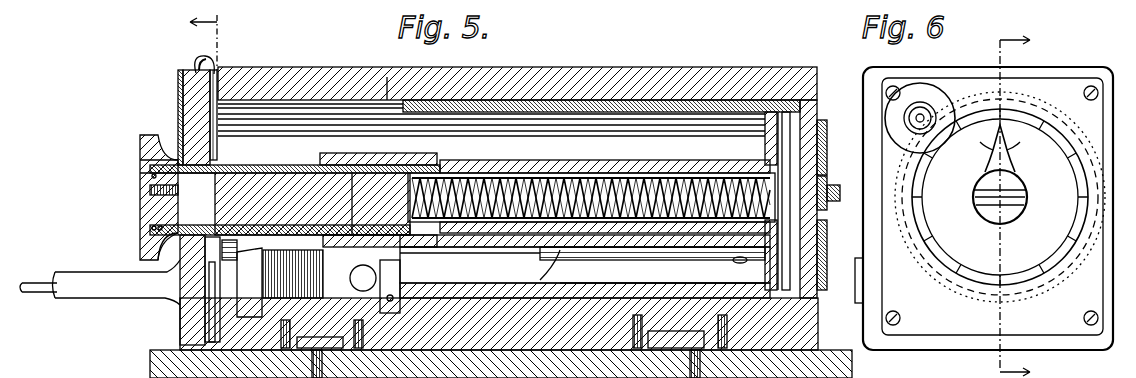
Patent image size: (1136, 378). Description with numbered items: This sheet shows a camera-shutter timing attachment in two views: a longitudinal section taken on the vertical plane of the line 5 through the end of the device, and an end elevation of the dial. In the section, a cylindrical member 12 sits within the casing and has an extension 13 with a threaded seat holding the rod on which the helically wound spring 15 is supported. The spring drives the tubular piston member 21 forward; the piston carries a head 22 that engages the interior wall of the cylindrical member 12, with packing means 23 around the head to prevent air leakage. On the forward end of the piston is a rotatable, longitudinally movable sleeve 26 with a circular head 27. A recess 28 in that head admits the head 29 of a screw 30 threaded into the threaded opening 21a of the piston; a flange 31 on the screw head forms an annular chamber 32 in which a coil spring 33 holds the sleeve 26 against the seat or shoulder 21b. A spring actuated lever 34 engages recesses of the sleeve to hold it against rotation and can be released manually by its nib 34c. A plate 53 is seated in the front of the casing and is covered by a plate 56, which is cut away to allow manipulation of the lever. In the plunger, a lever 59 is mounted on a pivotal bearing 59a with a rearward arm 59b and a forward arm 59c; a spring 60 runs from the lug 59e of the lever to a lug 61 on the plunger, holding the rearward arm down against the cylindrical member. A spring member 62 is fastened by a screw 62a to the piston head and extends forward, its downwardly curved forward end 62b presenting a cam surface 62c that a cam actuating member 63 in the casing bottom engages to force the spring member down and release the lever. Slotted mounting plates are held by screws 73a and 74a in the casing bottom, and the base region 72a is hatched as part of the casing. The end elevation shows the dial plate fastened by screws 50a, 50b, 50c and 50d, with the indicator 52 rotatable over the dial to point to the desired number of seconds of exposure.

In FIG. 5, the cylindrical member 12 is at (590, 100).
In FIG. 5, the extension 13 is at (215, 42).
In FIG. 5, the helically wound spring 15 is at (636, 178).
In FIG. 5, the tubular piston member 21 is at (546, 160).
In FIG. 5, the threaded opening 21a is at (233, 178).
In FIG. 5, the seat or shoulder 21b is at (342, 160).
In FIG. 5, the head 22 is at (740, 110).
In FIG. 5, the packing means 23 is at (762, 115).
In FIG. 5, the sleeve 26 is at (276, 166).
In FIG. 5, the circular head 27 is at (147, 157).
In FIG. 5, the recess 28 is at (140, 160).
In FIG. 5, the head 29 is at (140, 168).
In FIG. 5, the screw 30 is at (143, 190).
In FIG. 5, the flange 31 is at (145, 233).
In FIG. 5, the annular chamber 32 is at (147, 242).
In FIG. 5, the coil spring 33 is at (150, 228).
In FIG. 5, the spring actuated lever 34 is at (186, 100).
In FIG. 5, the nib 34c is at (198, 62).
In FIG. 5, the plate 53 is at (180, 88).
In FIG. 5, the plate 56 is at (215, 117).
In FIG. 5, the lever 59 is at (575, 274).
In FIG. 5, the pivotal bearing 59a is at (387, 254).
In FIG. 5, the arm 59b is at (470, 264).
In FIG. 5, the arm 59c is at (319, 274).
In FIG. 5, the lug 59e is at (360, 264).
In FIG. 5, the spring 60 is at (385, 245).
In FIG. 5, the lug 61 is at (330, 204).
In FIG. 5, the spring member 62 is at (662, 268).
In FIG. 5, the screw 62a is at (726, 258).
In FIG. 5, the forward end 62b is at (652, 257).
In FIG. 5, the cam surface 62c is at (558, 265).
In FIG. 5, the cam actuating member 63 is at (170, 290).
In FIG. 5, the base 72a is at (400, 300).
In FIG. 5, the screw 73a is at (322, 349).
In FIG. 5, the screw 74a is at (718, 325).
In FIG. 6, the section line 5 is at (1003, 202).
In FIG. 6, the screw 50a is at (888, 88).
In FIG. 6, the screw 50b is at (912, 304).
In FIG. 6, the screw 50c is at (1090, 86).
In FIG. 6, the screw 50d is at (1084, 318).
In FIG. 6, the indicator 52 is at (1012, 205).